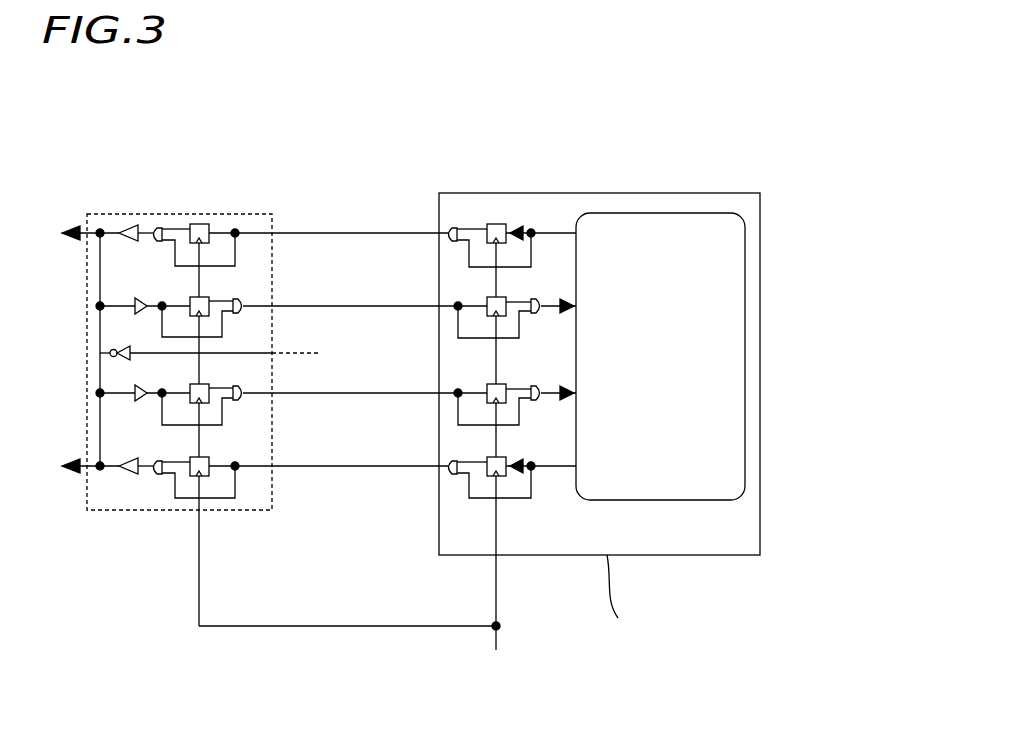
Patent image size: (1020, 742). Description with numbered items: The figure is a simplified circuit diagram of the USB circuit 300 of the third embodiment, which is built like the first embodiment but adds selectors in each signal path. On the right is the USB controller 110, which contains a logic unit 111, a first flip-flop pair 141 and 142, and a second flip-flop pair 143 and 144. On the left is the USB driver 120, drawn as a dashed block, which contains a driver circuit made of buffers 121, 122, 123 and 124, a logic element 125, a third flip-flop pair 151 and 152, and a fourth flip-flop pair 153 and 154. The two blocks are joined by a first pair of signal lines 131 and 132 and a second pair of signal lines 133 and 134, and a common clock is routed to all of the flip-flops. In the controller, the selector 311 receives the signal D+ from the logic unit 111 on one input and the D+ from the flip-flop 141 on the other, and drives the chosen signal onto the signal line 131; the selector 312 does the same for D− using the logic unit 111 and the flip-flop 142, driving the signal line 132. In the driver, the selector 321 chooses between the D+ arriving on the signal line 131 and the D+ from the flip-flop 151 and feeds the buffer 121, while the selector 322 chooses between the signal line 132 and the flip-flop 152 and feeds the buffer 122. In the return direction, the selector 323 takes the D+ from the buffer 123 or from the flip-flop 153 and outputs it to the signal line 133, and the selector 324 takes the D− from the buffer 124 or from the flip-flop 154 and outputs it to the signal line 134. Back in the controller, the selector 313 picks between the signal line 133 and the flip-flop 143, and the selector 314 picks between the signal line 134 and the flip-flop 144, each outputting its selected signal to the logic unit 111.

The USB circuit 300 is at (729, 112).
The USB controller 110 is at (600, 193).
The logic unit 111 is at (745, 331).
The USB driver 120 is at (107, 213).
The buffer 121 is at (130, 227).
The buffer 122 is at (127, 459).
The buffer 123 is at (140, 297).
The buffer 124 is at (147, 388).
The logic element 125 is at (127, 347).
The signal line 131 is at (330, 233).
The signal line 132 is at (330, 466).
The signal line 133 is at (330, 306).
The signal line 134 is at (330, 393).
The flip-flop 141 is at (497, 224).
The flip-flop 142 is at (488, 458).
The flip-flop 143 is at (488, 298).
The flip-flop 144 is at (488, 385).
The flip-flop 151 is at (203, 224).
The flip-flop 152 is at (208, 458).
The flip-flop 153 is at (207, 297).
The flip-flop 154 is at (208, 385).
The selector 311 is at (450, 228).
The selector 312 is at (453, 478).
The selector 313 is at (535, 316).
The selector 314 is at (535, 403).
The selector 321 is at (158, 227).
The selector 322 is at (156, 475).
The selector 323 is at (245, 300).
The selector 324 is at (245, 389).